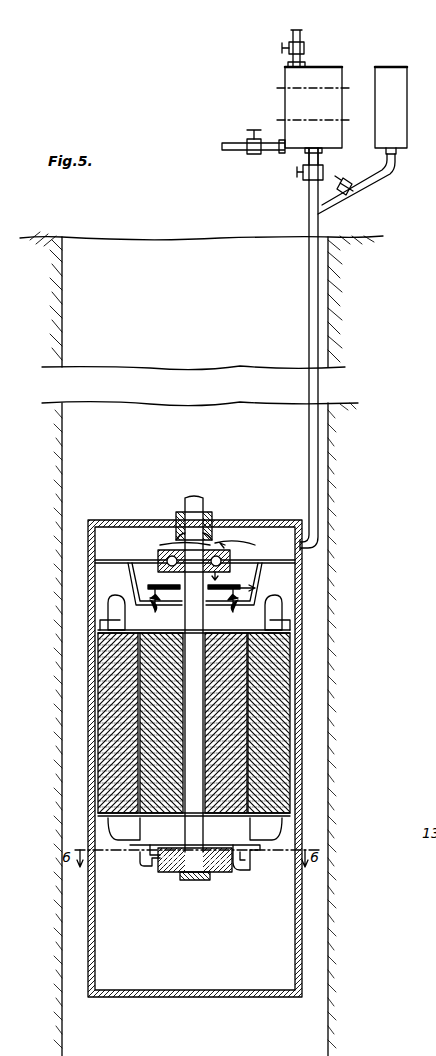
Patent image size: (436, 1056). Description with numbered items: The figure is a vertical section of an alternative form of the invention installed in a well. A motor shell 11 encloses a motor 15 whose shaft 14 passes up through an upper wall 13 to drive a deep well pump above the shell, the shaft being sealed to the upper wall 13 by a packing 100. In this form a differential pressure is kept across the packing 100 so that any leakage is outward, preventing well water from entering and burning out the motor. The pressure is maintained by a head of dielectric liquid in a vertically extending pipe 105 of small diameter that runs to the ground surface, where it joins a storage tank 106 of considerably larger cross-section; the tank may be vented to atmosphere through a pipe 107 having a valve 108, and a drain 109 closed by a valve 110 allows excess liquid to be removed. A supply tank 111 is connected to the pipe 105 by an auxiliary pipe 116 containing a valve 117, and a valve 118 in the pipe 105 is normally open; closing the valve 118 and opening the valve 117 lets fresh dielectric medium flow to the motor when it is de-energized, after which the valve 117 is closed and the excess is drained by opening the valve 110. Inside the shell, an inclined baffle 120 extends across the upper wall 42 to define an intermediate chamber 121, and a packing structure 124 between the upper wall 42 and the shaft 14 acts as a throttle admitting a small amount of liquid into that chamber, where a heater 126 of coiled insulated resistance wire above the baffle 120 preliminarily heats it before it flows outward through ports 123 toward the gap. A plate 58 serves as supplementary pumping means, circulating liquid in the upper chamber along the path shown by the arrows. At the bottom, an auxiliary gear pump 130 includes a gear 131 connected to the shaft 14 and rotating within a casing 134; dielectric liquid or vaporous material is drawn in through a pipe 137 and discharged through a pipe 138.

The motor shell 11 is at (300, 724).
The upper wall 13 is at (139, 520).
The shaft 14 is at (185, 824).
The motor 15 is at (101, 751).
The upper wall 42 is at (242, 605).
The plate 58 is at (157, 590).
The packing 100 is at (232, 521).
The pipe 105 is at (318, 463).
The storage tank 106 is at (290, 108).
The pipe 107 is at (302, 62).
The valve 108 is at (300, 44).
The drain 109 is at (272, 151).
The valve 110 is at (247, 148).
The tank 111 is at (405, 102).
The auxiliary pipe 116 is at (378, 186).
The valve 117 is at (345, 196).
The valve 118 is at (305, 180).
The baffle 120 is at (226, 723).
The intermediate chamber 121 is at (245, 618).
The ports 123 is at (118, 648).
The packing structure 124 is at (165, 605).
The heater 126 is at (161, 723).
The auxiliary pump 130 is at (163, 880).
The gear 131 is at (218, 870).
The casing 134 is at (200, 880).
The pipe 137 is at (242, 845).
The pipe 138 is at (140, 868).